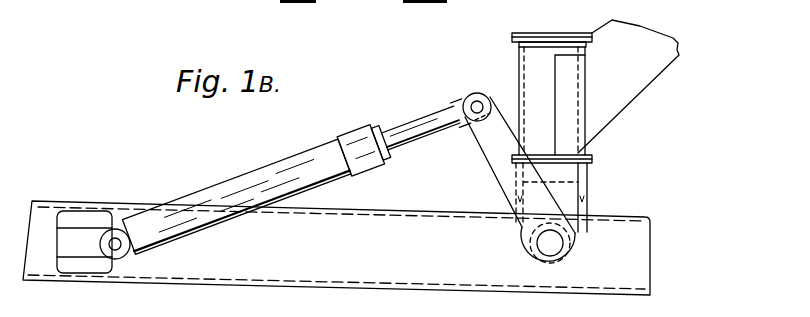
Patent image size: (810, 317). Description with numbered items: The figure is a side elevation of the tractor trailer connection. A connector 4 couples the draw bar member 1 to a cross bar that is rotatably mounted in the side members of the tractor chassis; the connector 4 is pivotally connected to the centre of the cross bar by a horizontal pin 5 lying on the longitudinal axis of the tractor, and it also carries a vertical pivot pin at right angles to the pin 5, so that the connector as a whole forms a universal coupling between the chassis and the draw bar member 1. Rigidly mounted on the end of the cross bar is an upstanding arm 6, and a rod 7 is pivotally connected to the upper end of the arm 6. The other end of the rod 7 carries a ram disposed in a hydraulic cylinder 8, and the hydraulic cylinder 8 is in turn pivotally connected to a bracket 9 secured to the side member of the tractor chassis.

The draw bar member 1 is at (610, 67).
The connector 4 is at (553, 35).
The horizontal pin 5 is at (578, 85).
The upstanding arm 6 is at (493, 148).
The rod 7 is at (397, 129).
The hydraulic cylinder 8 is at (188, 198).
The bracket 9 is at (74, 222).